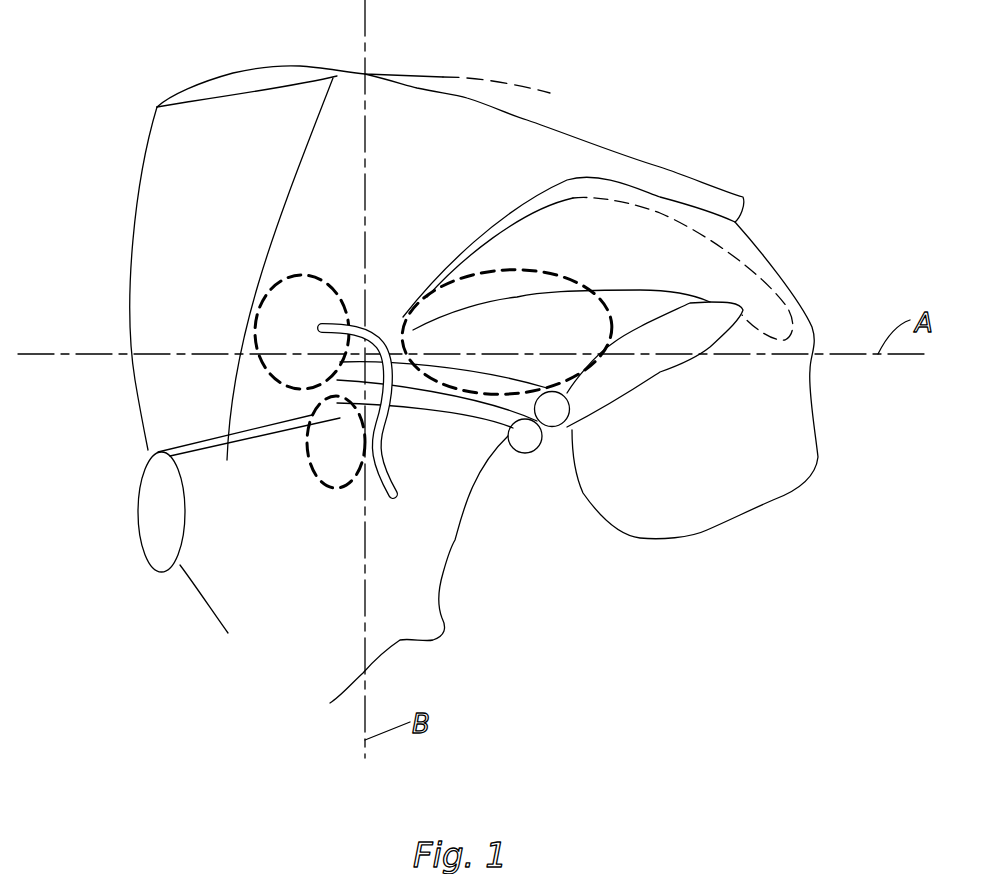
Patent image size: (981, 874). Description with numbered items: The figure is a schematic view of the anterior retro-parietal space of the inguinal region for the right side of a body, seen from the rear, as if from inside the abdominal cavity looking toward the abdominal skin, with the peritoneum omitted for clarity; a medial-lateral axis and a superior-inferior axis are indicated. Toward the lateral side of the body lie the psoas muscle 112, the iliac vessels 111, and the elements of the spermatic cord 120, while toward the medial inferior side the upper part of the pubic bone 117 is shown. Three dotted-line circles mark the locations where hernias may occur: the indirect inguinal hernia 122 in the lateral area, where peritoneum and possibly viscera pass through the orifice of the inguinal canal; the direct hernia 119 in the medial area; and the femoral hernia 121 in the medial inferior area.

The iliac vessels 111 is at (552, 412).
The psoas muscle 112 is at (637, 305).
The pubic bone 117 is at (153, 503).
The direct hernia 119 is at (288, 275).
The elements of the spermatic cord 120 is at (393, 475).
The femoral hernia 121 is at (313, 470).
The indirect inguinal hernia 122 is at (577, 280).